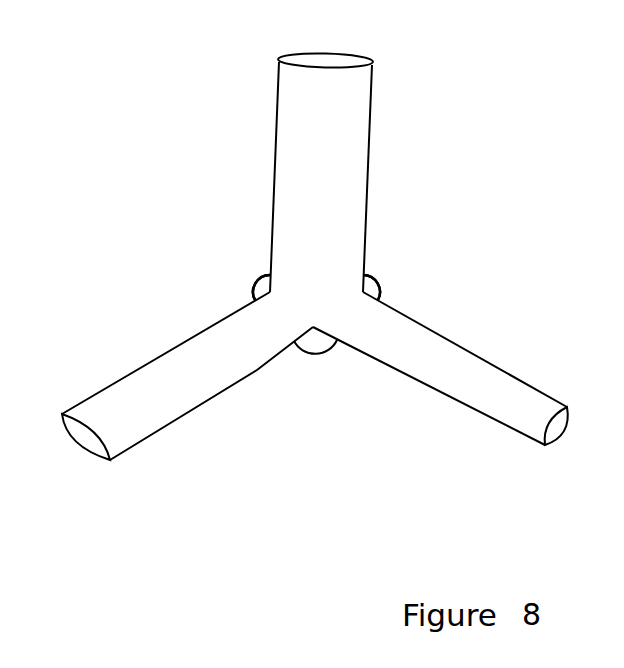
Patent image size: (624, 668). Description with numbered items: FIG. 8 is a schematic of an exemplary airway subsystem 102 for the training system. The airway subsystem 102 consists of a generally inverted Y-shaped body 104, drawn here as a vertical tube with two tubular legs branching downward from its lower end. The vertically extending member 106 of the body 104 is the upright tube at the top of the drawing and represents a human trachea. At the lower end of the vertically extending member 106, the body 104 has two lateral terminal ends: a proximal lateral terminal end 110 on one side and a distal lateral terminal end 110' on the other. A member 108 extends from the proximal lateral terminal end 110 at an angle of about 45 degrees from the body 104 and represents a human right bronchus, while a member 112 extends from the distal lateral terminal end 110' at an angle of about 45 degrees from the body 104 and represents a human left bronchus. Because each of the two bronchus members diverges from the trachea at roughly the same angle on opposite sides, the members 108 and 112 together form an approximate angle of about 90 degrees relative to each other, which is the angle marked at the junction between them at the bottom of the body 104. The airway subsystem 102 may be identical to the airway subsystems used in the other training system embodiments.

The airway subsystem 102 is at (435, 67).
The inverted Y-shaped body 104 is at (390, 115).
The vertically extending member 106 is at (352, 180).
The member 108 is at (192, 393).
The proximal lateral terminal end 110 is at (238, 257).
The distal lateral terminal end 110' is at (394, 267).
The member 112 is at (442, 352).
The 45 degree angle 45 is at (311, 288).
The 90 degree angle 90 is at (315, 360).